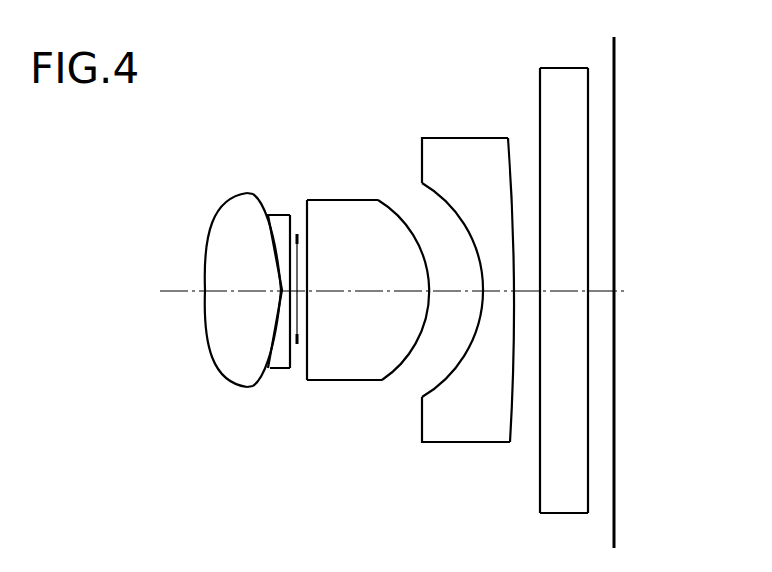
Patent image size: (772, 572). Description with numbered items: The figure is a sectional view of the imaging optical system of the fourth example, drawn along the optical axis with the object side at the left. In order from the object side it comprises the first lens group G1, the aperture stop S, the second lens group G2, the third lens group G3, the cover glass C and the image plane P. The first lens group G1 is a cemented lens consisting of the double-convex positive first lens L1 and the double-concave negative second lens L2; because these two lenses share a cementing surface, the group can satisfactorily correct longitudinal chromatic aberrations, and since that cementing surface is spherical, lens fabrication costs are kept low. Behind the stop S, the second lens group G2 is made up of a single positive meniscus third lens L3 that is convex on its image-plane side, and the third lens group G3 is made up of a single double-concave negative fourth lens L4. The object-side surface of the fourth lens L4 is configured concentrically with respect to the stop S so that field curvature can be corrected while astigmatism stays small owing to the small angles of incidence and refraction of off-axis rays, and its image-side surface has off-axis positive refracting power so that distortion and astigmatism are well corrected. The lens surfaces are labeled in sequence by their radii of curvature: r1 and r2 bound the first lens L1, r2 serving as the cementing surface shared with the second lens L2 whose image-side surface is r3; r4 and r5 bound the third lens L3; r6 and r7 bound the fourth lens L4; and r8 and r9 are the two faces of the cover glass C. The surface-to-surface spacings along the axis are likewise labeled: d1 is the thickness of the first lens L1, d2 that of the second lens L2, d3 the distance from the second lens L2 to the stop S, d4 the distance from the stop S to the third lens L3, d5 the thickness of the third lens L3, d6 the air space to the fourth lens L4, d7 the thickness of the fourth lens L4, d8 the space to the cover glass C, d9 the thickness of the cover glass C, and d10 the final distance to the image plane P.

The first lens group G1 is at (292, 58).
The second lens group G2 is at (408, 58).
The third lens group G3 is at (517, 58).
The first lens L1 is at (250, 227).
The second lens L2 is at (273, 214).
The third lens L3 is at (353, 222).
The fourth lens L4 is at (468, 155).
The aperture stop S is at (298, 238).
The cover glass C is at (564, 88).
The image plane P is at (617, 132).
The radius of curvature of first lens surface r1 is at (211, 237).
The radius of curvature of second lens surface r2 is at (267, 212).
The radius of curvature of third lens surface r3 is at (291, 231).
The radius of curvature of fourth lens surface r4 is at (309, 255).
The radius of curvature of fifth lens surface r5 is at (405, 224).
The radius of curvature of sixth lens surface r6 is at (447, 208).
The radius of curvature of seventh lens surface r7 is at (517, 152).
The radius of curvature of eighth surface r8 is at (539, 96).
The radius of curvature of ninth surface r9 is at (589, 92).
The first surface spacing d1 is at (243, 307).
The second surface spacing d2 is at (282, 369).
The third surface spacing d3 is at (294, 292).
The fourth surface spacing d4 is at (301, 292).
The fifth surface spacing d5 is at (367, 305).
The sixth surface spacing d6 is at (455, 306).
The seventh surface spacing d7 is at (499, 306).
The eighth surface spacing d8 is at (524, 292).
The ninth surface spacing d9 is at (564, 306).
The tenth surface spacing d10 is at (604, 292).